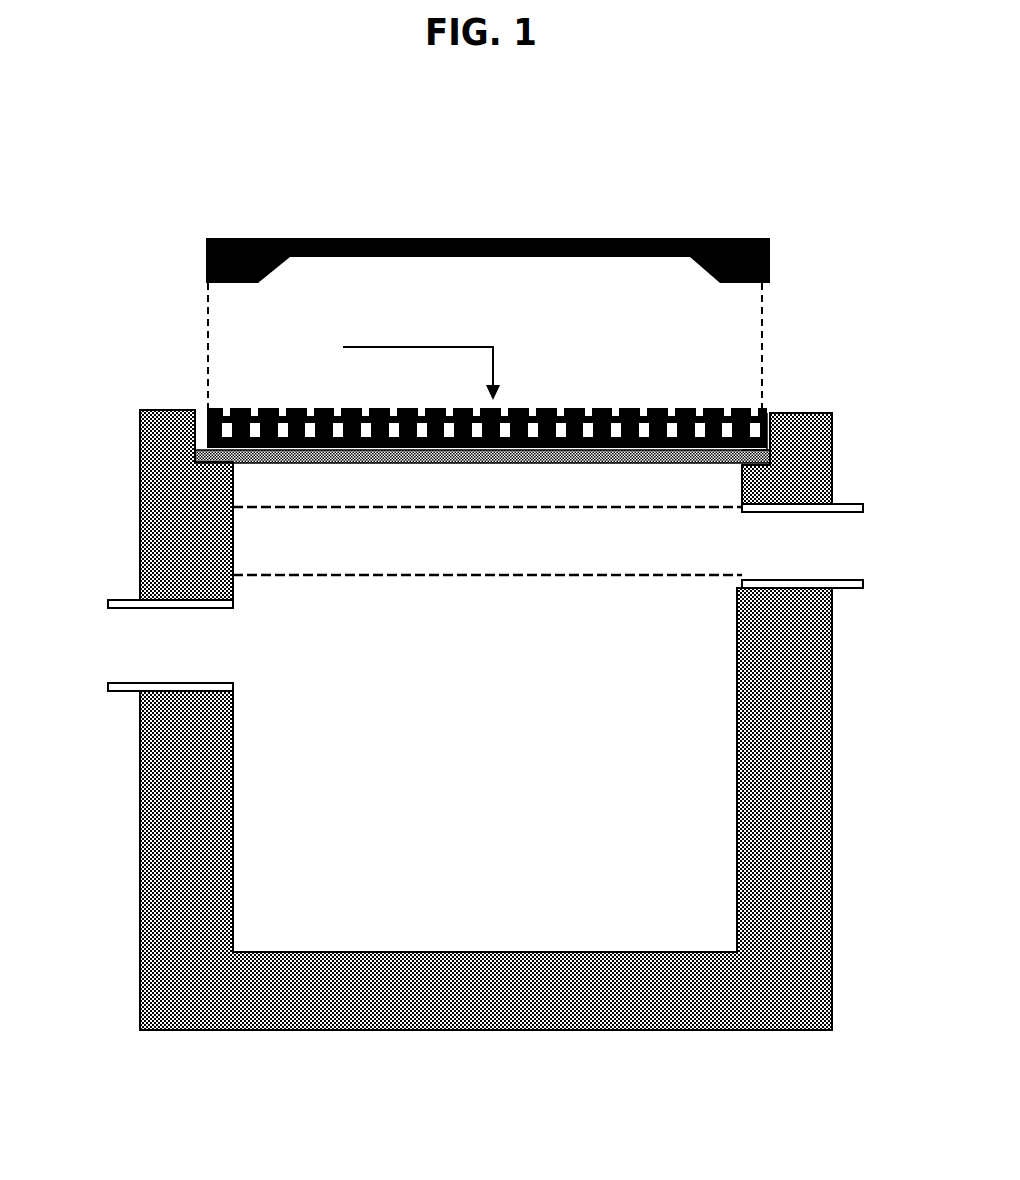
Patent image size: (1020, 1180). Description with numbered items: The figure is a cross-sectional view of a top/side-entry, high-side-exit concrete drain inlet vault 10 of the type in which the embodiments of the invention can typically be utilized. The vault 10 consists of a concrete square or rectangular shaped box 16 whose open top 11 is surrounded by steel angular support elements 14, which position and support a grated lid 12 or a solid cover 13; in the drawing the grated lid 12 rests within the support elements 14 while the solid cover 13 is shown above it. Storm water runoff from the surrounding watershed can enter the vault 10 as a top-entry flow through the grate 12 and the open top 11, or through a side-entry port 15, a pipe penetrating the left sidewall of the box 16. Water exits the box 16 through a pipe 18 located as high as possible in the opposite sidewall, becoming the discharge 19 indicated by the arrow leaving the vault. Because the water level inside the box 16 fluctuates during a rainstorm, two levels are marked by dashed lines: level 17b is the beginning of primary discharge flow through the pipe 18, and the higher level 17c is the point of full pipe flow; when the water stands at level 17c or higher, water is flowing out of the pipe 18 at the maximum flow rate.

The drain inlet vault 10 is at (486, 755).
The open top 11 is at (482, 475).
The grated lid 12 is at (346, 410).
The solid cover 13 is at (366, 240).
The steel angular support elements 14 is at (772, 458).
The side-entry port 15 is at (42, 647).
The concrete box 16 is at (229, 920).
The water level at beginning of primary discharge flow 17b is at (437, 575).
The water level at full pipe flow 17c is at (366, 507).
The exit pipe 18 is at (802, 546).
The discharge 19 is at (823, 573).